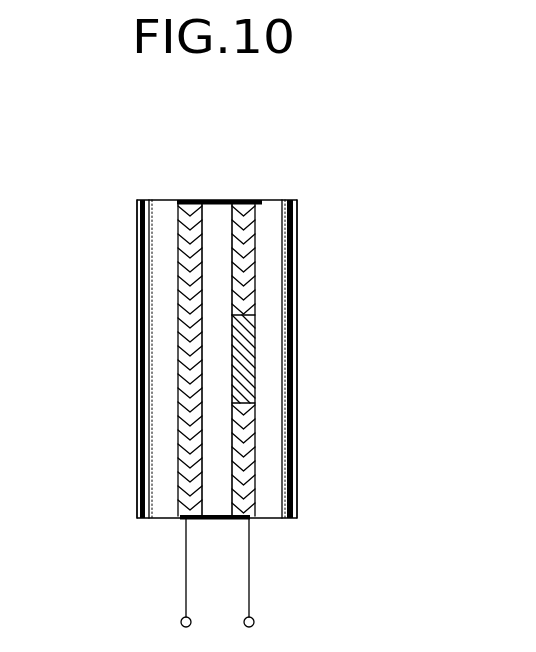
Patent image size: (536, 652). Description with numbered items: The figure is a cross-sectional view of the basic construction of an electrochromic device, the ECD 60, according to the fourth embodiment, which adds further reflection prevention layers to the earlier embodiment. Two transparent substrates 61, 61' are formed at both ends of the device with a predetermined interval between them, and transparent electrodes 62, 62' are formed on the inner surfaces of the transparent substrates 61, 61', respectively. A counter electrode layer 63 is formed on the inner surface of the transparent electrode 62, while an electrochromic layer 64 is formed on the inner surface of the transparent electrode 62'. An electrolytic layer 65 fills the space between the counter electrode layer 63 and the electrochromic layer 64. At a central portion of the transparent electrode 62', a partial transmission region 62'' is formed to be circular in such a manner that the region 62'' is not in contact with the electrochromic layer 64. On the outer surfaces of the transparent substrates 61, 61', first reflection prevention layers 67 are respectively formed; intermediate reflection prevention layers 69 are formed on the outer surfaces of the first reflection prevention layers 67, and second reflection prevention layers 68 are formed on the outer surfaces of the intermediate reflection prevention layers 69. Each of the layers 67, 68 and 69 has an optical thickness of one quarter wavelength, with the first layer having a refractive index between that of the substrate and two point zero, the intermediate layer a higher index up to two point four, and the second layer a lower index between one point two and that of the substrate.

The ECD 60 is at (317, 218).
The transparent substrate 61 is at (119, 359).
The transparent substrate 61' is at (308, 327).
The transparent electrode 62 is at (195, 175).
The transparent electrode 62' is at (240, 324).
The partial transmission region 62'' is at (304, 359).
The counter electrode layer 63 is at (197, 205).
The electrochromic layer 64 is at (239, 209).
The electrolytic layer 65 is at (220, 212).
The first reflection prevention layer 67 is at (150, 284).
The second reflection prevention layer 68 is at (140, 298).
The intermediate reflection prevention layer 69 is at (143, 330).